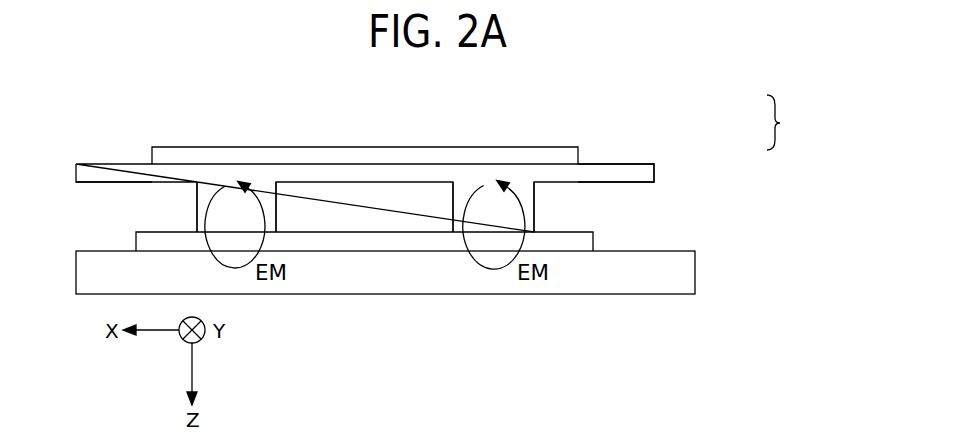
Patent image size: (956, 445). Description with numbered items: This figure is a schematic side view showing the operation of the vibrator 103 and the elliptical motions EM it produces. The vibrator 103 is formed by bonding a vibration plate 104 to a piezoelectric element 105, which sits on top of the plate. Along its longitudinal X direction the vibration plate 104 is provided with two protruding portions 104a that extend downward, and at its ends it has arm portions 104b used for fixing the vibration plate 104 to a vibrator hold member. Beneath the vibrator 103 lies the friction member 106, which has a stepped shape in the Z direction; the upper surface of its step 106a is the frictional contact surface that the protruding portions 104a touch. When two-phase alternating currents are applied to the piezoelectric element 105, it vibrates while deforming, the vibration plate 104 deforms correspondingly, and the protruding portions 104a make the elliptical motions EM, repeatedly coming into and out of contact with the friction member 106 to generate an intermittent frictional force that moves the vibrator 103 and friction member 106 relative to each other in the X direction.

The vibrator 103 is at (792, 122).
The vibration plate 104 is at (570, 175).
The protruding portions 104a is at (265, 185).
The arm portions 104b is at (122, 173).
The piezoelectric element 105 is at (570, 157).
The friction member 106 is at (672, 275).
The step 106a is at (580, 243).